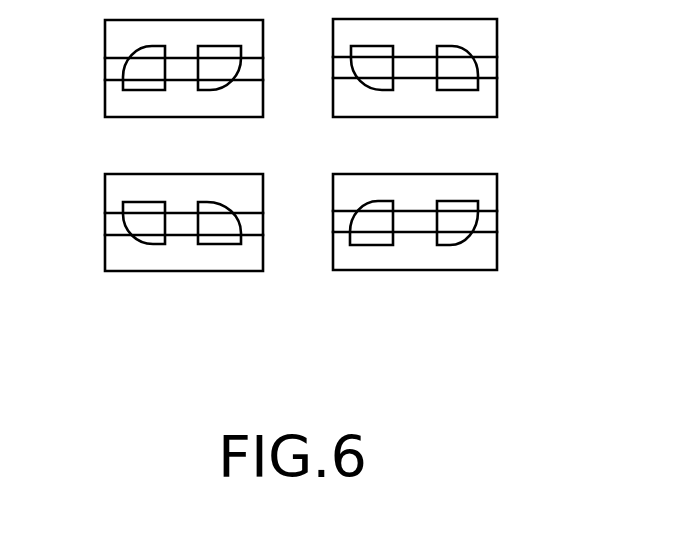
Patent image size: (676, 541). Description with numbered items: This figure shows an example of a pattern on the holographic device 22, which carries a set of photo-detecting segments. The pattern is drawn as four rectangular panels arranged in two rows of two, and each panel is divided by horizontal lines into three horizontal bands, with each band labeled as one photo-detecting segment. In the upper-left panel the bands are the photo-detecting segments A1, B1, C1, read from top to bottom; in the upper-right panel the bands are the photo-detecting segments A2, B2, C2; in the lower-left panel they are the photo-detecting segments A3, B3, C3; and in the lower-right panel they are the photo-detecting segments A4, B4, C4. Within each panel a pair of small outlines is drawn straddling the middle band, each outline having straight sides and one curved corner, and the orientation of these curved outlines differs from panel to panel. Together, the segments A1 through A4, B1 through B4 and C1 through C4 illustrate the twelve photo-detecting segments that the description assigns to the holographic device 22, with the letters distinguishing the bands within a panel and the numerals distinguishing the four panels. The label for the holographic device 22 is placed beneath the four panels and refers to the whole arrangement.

The holographic device 22 is at (301, 197).
The photo-detecting segment A1 is at (153, 37).
The photo-detecting segment B1 is at (153, 67).
The photo-detecting segment C1 is at (153, 102).
The photo-detecting segment A2 is at (446, 36).
The photo-detecting segment B2 is at (446, 67).
The photo-detecting segment C2 is at (446, 101).
The photo-detecting segment A3 is at (153, 192).
The photo-detecting segment B3 is at (153, 225).
The photo-detecting segment C3 is at (153, 257).
The photo-detecting segment A4 is at (446, 191).
The photo-detecting segment B4 is at (446, 225).
The photo-detecting segment C4 is at (446, 255).